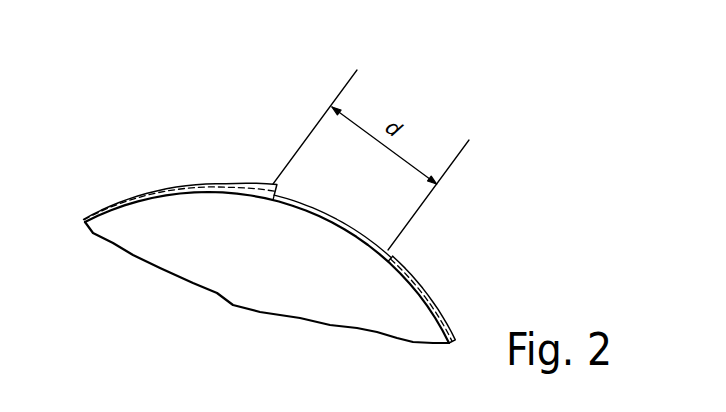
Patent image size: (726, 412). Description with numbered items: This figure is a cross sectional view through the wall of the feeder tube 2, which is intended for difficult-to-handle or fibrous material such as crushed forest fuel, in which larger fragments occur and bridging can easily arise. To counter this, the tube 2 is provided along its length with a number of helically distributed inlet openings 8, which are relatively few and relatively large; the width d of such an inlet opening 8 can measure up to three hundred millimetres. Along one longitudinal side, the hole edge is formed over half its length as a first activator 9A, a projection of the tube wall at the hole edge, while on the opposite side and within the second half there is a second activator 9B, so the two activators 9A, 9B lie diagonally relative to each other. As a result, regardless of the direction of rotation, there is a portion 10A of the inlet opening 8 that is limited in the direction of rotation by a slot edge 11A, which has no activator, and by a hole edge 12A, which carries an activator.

The tube 2 is at (110, 208).
The first activator 9A is at (253, 183).
The second activator 9B is at (400, 254).
The inlet opening 8 is at (338, 217).
The portion 10A is at (323, 211).
The hole edge 12A is at (280, 186).
The slot edge 11A is at (384, 258).